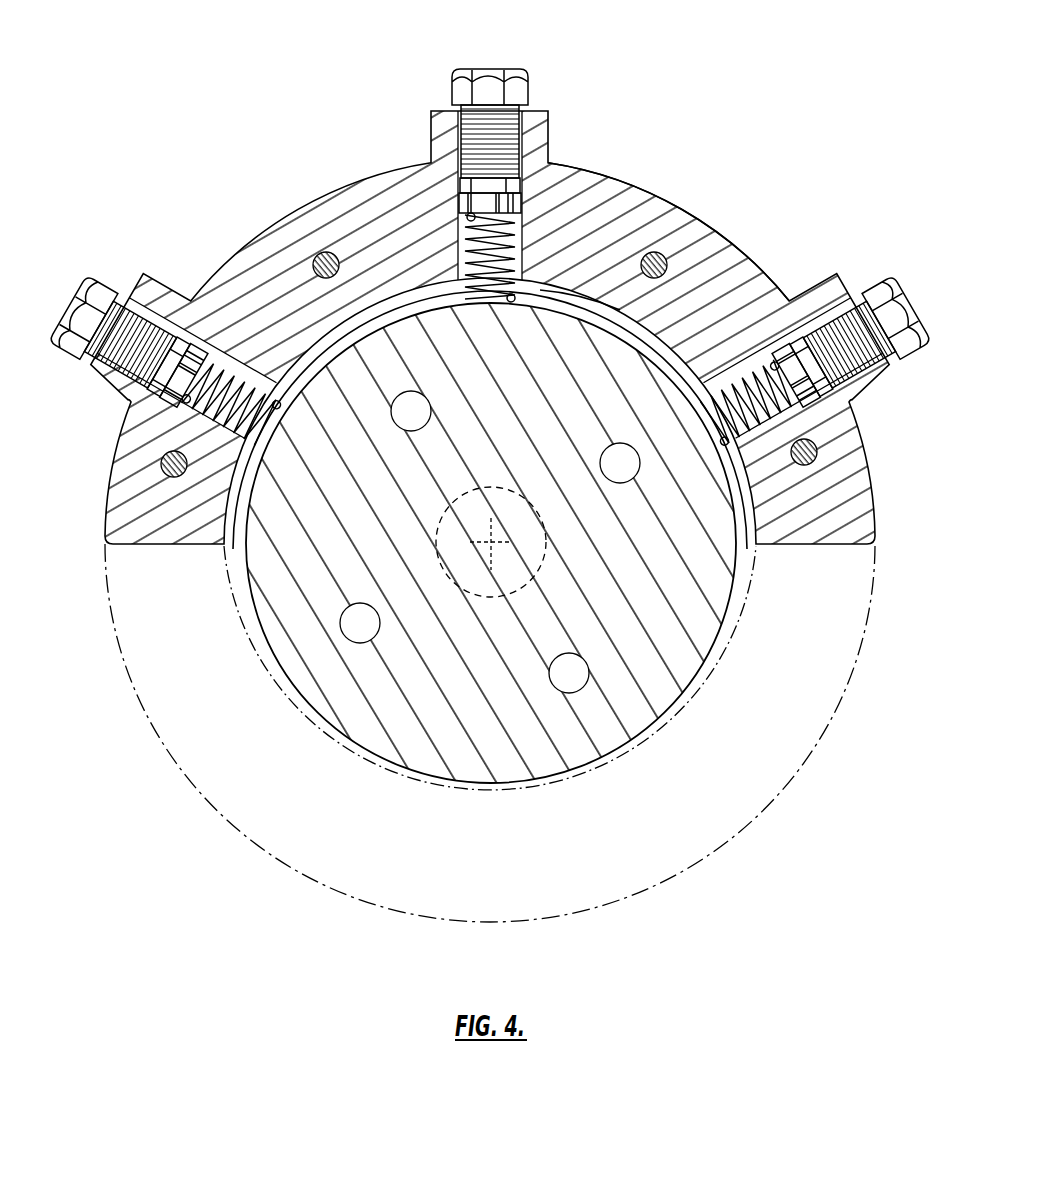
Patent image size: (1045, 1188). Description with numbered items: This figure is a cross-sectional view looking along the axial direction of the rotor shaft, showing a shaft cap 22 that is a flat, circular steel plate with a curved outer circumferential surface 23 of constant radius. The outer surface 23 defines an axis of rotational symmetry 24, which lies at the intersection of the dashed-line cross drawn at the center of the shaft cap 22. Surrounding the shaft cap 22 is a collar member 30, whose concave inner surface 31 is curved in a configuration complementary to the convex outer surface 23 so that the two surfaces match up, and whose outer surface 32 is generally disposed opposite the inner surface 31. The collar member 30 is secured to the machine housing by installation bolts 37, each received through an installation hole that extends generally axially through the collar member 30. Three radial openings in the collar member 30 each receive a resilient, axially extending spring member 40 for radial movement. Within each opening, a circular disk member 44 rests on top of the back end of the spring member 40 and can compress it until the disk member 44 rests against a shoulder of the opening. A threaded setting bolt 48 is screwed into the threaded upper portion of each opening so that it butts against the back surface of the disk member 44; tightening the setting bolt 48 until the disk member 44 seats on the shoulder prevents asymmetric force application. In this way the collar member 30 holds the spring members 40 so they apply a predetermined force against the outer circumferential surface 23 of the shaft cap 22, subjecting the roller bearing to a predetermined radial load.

The shaft cap 22 is at (372, 733).
The outer circumferential surface 23 is at (546, 283).
The axis of rotational symmetry 24 is at (546, 527).
The collar member 30 is at (735, 246).
The inner surface 31 is at (400, 322).
The outer surface 32 is at (619, 178).
The installation bolt 37 is at (814, 446).
The spring member 40 is at (490, 330).
The disk member 44 is at (454, 302).
The setting bolt 48 is at (490, 201).